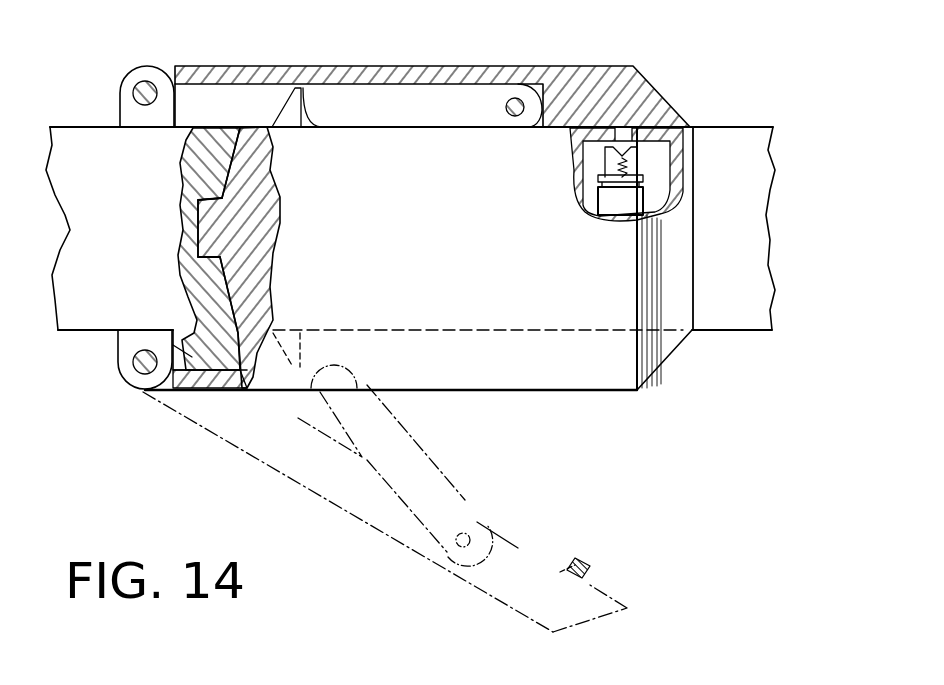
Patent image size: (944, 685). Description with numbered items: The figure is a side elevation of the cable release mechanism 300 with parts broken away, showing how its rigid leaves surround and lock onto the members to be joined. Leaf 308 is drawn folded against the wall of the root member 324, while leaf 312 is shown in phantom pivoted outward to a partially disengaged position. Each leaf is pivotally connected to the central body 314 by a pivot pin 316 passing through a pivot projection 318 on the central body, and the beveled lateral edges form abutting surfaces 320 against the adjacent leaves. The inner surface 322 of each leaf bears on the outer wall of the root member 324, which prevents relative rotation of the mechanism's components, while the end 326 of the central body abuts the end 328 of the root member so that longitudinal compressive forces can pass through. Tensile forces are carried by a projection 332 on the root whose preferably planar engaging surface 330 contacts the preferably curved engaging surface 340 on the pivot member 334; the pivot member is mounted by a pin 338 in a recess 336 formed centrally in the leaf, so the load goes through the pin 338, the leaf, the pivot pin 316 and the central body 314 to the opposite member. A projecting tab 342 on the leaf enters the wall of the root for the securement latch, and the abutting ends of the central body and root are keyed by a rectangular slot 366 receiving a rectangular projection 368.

The release mechanism 300 is at (282, 67).
The leaf 308 is at (403, 65).
The leaf 312 is at (590, 393).
The central body 314 is at (124, 172).
The pivot pin 316 is at (146, 86).
The pivot projection 318 is at (120, 102).
The abutting surface 320 is at (274, 451).
The inner surface 322 is at (520, 540).
The root member 324 is at (402, 272).
The end of central body 326 is at (222, 183).
The end of root member 328 is at (228, 172).
The engaging surface 330 is at (298, 346).
The projection 332 is at (290, 117).
The pivot member 334 is at (452, 107).
The recess 336 is at (238, 100).
The pin 338 is at (522, 95).
The engaging surface 340 is at (293, 393).
The projecting tab 342 is at (588, 568).
The rectangular slot 366 is at (197, 240).
The rectangular projection 368 is at (210, 230).